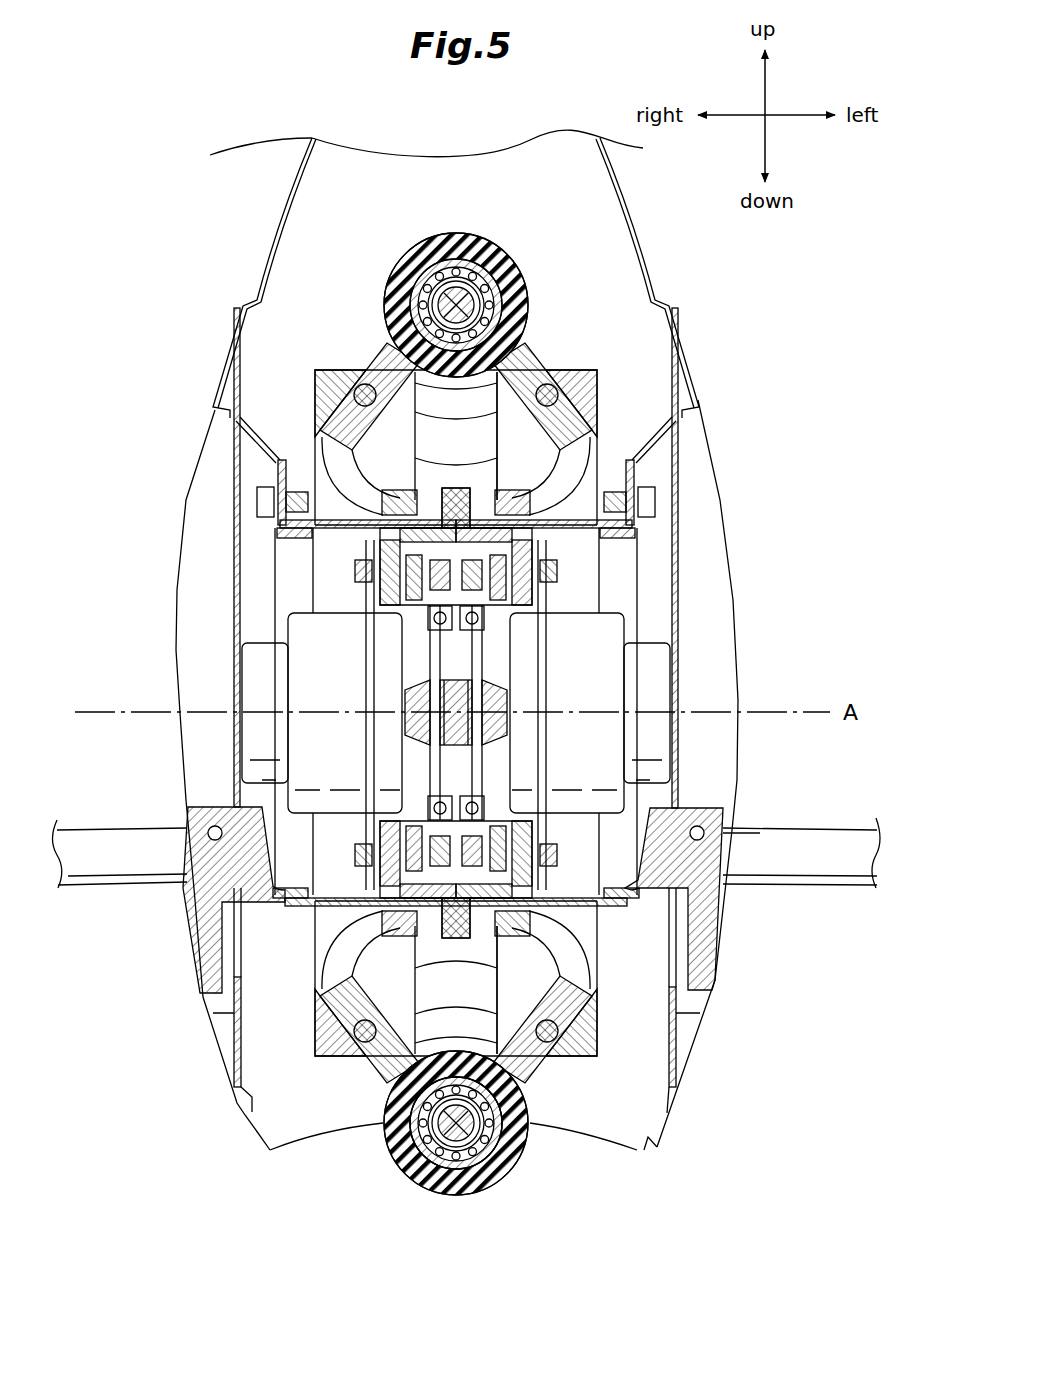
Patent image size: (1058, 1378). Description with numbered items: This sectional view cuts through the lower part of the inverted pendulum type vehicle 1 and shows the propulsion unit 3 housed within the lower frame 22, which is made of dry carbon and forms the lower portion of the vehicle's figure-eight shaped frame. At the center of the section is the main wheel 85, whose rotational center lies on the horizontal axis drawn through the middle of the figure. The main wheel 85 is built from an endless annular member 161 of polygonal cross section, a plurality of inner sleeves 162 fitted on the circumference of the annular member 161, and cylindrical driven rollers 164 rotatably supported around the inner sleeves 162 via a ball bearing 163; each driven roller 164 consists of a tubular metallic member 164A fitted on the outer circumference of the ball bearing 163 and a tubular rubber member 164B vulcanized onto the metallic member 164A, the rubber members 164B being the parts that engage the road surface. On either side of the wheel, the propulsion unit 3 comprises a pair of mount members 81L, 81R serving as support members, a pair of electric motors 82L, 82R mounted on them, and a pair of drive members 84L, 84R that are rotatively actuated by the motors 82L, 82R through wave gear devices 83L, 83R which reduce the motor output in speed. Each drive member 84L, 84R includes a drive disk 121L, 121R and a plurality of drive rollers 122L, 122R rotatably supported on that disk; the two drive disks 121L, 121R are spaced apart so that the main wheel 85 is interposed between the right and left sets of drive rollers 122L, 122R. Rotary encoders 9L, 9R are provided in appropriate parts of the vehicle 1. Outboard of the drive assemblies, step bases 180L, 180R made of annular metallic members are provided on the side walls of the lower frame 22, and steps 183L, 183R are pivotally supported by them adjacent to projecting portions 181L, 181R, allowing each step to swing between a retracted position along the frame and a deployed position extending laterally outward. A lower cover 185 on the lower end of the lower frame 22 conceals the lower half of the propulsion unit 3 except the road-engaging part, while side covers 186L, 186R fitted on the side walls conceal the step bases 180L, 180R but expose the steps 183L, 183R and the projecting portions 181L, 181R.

The inverted pendulum type vehicle 1 is at (205, 112).
The propulsion unit 3 is at (300, 1045).
The rotary encoder 9R is at (252, 745).
The rotary encoder 9L is at (660, 745).
The lower frame 22 is at (292, 182).
The mount member 81R is at (385, 575).
The mount member 81L is at (530, 575).
The electric motor 82R is at (300, 690).
The electric motor 82L is at (612, 690).
The wave gear device 83R is at (418, 655).
The wave gear device 83L is at (495, 655).
The drive member 84R is at (358, 343).
The drive member 84L is at (552, 340).
The main wheel 85 is at (515, 205).
The drive disk 121R is at (308, 410).
The drive disk 121L is at (600, 410).
The drive rollers 122R is at (322, 445).
The drive rollers 122L is at (592, 445).
The annular member 161 is at (453, 1133).
The inner sleeves 162 is at (478, 1153).
The ball bearing 163 is at (445, 1157).
The driven rollers 164 is at (385, 1153).
The tubular metallic member 164A is at (408, 1153).
The tubular rubber member 164B is at (430, 1162).
The step base 180R is at (334, 535).
The step base 180L is at (578, 535).
The projecting portion 181R is at (205, 905).
The projecting portion 181L is at (713, 980).
The step 183R is at (117, 833).
The step 183L is at (800, 836).
The lower cover 185 is at (647, 1142).
The side cover 186R is at (248, 452).
The side cover 186L is at (672, 452).